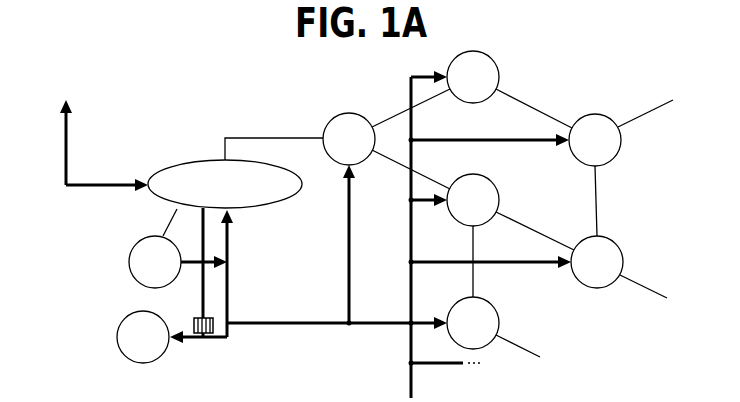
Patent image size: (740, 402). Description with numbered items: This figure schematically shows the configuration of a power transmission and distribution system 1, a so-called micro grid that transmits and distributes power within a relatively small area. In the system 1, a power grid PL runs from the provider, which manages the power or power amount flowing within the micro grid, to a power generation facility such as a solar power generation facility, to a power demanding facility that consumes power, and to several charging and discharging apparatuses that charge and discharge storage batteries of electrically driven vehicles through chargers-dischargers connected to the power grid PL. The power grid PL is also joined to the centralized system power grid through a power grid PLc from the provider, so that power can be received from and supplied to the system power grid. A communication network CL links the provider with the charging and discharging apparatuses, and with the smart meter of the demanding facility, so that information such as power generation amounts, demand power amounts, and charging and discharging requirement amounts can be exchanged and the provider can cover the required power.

The power transmission and distribution system 1 is at (225, 97).
The power grid PL is at (316, 328).
The power grid PLc is at (90, 188).
The communication network CL is at (281, 137).